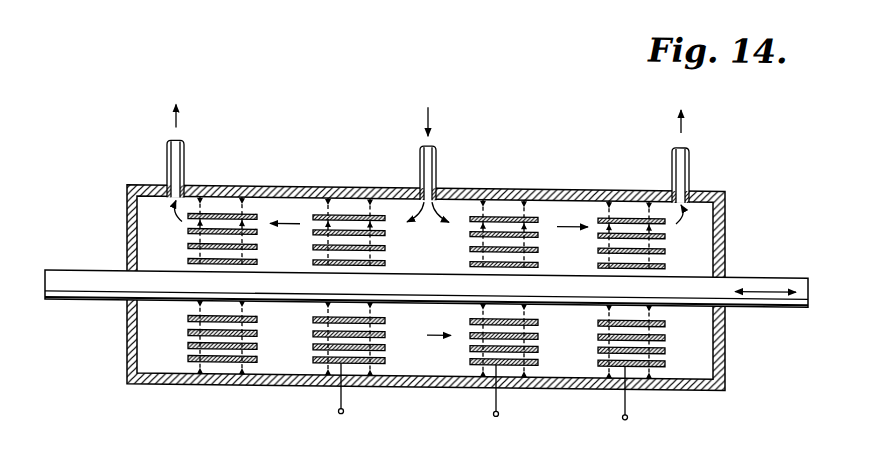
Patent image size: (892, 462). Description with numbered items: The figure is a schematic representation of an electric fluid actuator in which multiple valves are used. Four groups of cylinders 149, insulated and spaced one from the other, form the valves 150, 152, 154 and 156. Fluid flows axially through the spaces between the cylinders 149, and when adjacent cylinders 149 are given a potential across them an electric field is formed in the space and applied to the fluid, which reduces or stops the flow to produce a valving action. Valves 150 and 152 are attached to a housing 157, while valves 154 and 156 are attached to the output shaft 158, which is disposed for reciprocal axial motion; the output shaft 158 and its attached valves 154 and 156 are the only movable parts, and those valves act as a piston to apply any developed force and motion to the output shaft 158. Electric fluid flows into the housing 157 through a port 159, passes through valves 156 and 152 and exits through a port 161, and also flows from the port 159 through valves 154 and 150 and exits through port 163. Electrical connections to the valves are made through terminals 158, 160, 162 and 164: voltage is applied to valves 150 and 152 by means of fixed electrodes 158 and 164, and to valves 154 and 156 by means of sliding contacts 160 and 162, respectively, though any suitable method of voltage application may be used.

The cylinders 149 is at (200, 257).
The valve 150 is at (258, 314).
The valve 152 is at (708, 347).
The valve 154 is at (386, 249).
The valve 156 is at (538, 314).
The housing 157 is at (293, 185).
The output shaft 158 is at (364, 296).
The port 159 is at (440, 149).
The terminal 160 is at (342, 402).
The port 161 is at (691, 154).
The terminal 162 is at (497, 404).
The port 163 is at (186, 150).
The terminal 164 is at (627, 406).